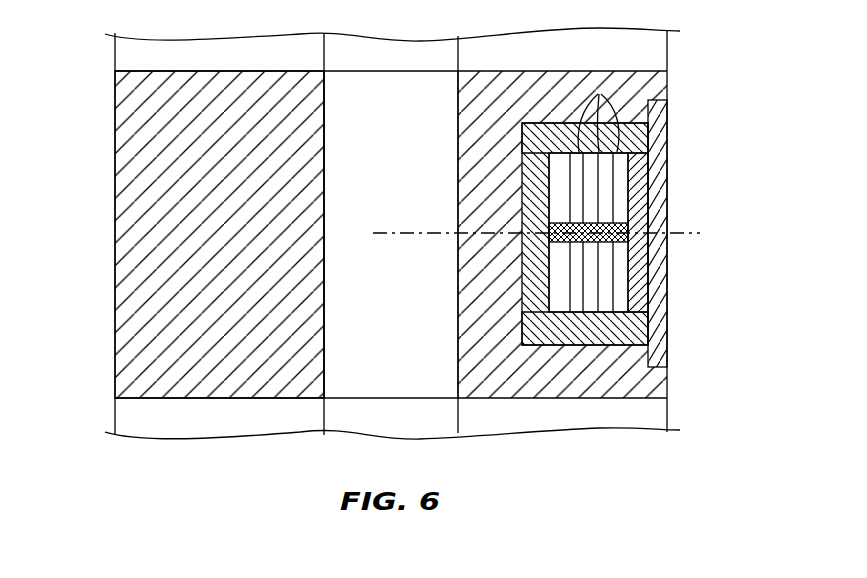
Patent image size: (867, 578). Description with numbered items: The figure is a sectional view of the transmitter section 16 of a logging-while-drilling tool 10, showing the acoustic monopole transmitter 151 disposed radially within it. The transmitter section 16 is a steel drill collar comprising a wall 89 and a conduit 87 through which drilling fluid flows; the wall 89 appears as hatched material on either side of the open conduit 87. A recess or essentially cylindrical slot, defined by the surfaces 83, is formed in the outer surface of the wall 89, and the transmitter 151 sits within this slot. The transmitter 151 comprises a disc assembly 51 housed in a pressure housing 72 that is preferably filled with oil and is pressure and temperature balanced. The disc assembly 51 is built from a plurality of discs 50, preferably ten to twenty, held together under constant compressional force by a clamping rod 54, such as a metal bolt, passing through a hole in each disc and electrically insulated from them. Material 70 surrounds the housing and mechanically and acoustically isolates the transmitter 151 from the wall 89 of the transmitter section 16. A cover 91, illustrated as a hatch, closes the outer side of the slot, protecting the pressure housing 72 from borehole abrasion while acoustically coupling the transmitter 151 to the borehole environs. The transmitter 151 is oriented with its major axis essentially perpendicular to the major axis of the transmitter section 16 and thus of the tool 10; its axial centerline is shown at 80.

The tool 10 is at (682, 92).
The transmitter section 16 is at (138, 220).
The discs 50 is at (598, 92).
The disc assembly 51 is at (586, 168).
The acoustic monopole transmitter 151 is at (546, 197).
The rod 54 is at (620, 224).
The material 70 is at (563, 213).
The pressure housing 72 is at (612, 327).
The axial centerline 80 is at (428, 232).
The surfaces 83 is at (543, 124).
The conduit 87 is at (404, 379).
The wall 89 is at (232, 381).
The cover 91 is at (668, 168).